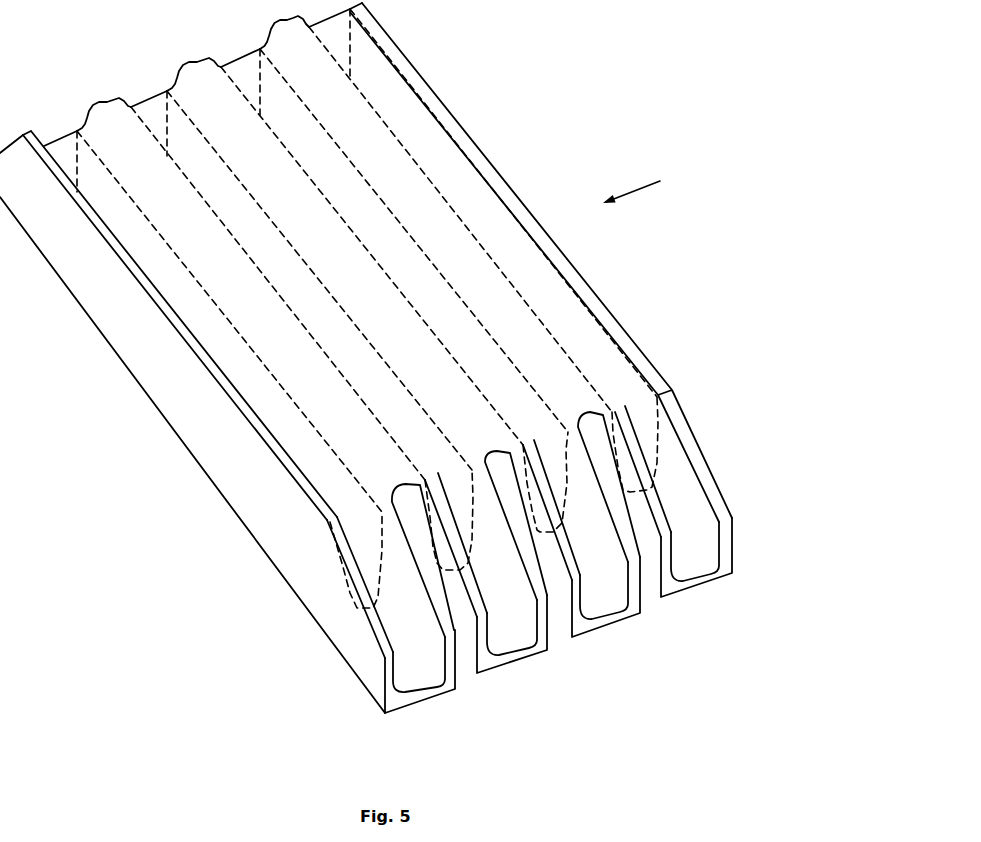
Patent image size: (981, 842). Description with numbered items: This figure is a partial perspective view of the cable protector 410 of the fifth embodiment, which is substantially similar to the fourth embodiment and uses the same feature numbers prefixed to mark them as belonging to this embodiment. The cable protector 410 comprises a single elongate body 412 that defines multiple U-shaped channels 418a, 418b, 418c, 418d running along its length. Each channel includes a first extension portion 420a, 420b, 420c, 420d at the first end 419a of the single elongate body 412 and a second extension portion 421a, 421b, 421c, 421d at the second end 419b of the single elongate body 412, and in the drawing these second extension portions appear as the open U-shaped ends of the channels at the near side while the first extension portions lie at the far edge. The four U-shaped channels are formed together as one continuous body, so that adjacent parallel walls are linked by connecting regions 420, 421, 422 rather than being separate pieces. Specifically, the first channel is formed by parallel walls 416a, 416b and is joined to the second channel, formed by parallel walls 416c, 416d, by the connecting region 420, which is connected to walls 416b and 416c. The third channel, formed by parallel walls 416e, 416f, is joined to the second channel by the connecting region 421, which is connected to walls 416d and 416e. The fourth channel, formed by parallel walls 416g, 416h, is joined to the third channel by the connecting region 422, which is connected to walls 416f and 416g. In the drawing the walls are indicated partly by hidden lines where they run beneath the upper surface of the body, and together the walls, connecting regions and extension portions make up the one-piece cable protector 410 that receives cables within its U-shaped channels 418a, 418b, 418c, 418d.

The cable protector 410 is at (658, 191).
The single elongate body 412 is at (192, 358).
The parallel wall 416a is at (302, 405).
The parallel wall 416b is at (357, 395).
The parallel wall 416c is at (408, 388).
The parallel wall 416d is at (462, 378).
The parallel wall 416e is at (455, 362).
The parallel wall 416f is at (510, 362).
The parallel wall 416g is at (563, 345).
The parallel wall 416h is at (617, 333).
The U-shaped channel 418a is at (158, 255).
The U-shaped channel 418b is at (247, 237).
The U-shaped channel 418c is at (355, 218).
The U-shaped channel 418d is at (463, 200).
The first end 419a is at (180, 325).
The second end 419b is at (332, 587).
The connecting region 420 is at (312, 376).
The first extension portion 420a is at (68, 148).
The first extension portion 420b is at (155, 102).
The first extension portion 420c is at (247, 83).
The first extension portion 420d is at (337, 38).
The connecting region 421 is at (405, 344).
The second extension portion 421a is at (410, 667).
The second extension portion 421b is at (517, 632).
The second extension portion 421c is at (607, 595).
The second extension portion 421d is at (678, 562).
The connecting region 422 is at (495, 305).